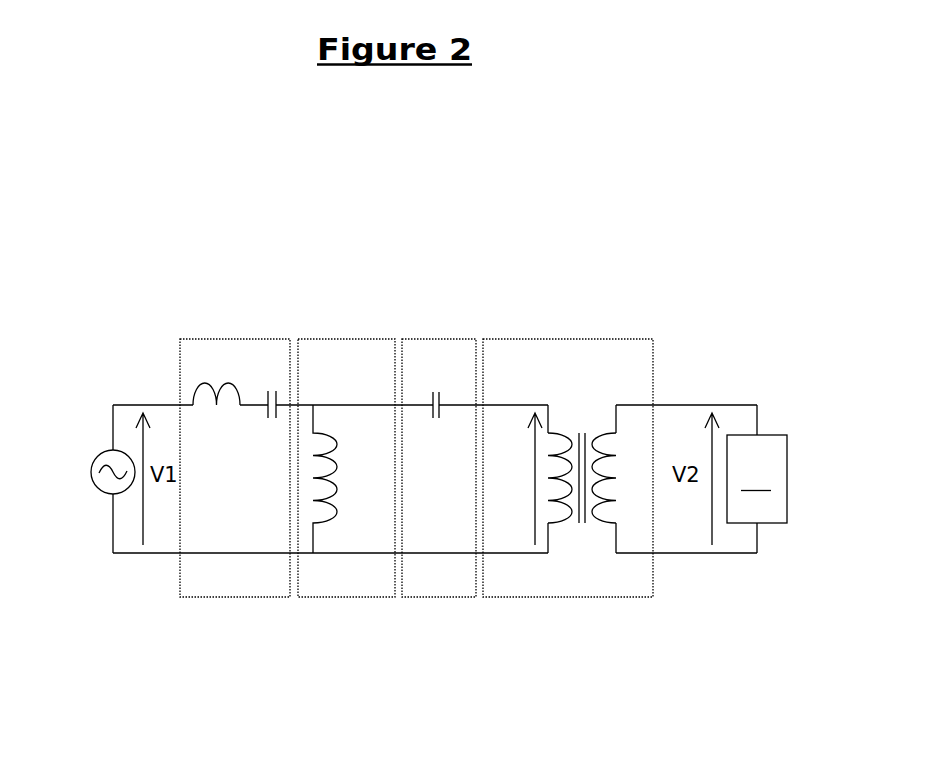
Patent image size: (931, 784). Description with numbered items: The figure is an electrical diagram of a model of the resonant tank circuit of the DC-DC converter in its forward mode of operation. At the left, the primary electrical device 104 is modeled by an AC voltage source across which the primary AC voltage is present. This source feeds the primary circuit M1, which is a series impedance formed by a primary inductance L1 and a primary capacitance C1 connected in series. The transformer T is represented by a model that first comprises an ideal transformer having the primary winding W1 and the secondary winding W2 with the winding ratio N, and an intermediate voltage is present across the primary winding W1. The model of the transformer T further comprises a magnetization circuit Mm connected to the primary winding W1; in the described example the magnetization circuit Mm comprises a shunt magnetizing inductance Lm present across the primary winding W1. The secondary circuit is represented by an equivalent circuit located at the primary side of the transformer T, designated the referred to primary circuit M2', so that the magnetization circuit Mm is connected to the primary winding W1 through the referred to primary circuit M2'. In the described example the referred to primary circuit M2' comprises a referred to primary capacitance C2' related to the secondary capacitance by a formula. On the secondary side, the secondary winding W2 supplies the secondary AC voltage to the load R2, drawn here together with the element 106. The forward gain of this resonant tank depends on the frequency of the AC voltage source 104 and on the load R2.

The primary electrical device 104 is at (99, 456).
The load 106 is at (782, 463).
The primary circuit M1 is at (220, 339).
The magnetization circuit Mm is at (317, 339).
The referred to primary circuit M2' is at (445, 452).
The primary inductance L1 is at (193, 384).
The primary capacitance C1 is at (268, 391).
The referred to primary capacitance C2' is at (438, 387).
The shunt magnetizing inductance Lm is at (313, 457).
The primary winding W1 is at (552, 524).
The secondary winding W2 is at (610, 433).
The transformer T is at (372, 597).
The load R2 is at (787, 453).